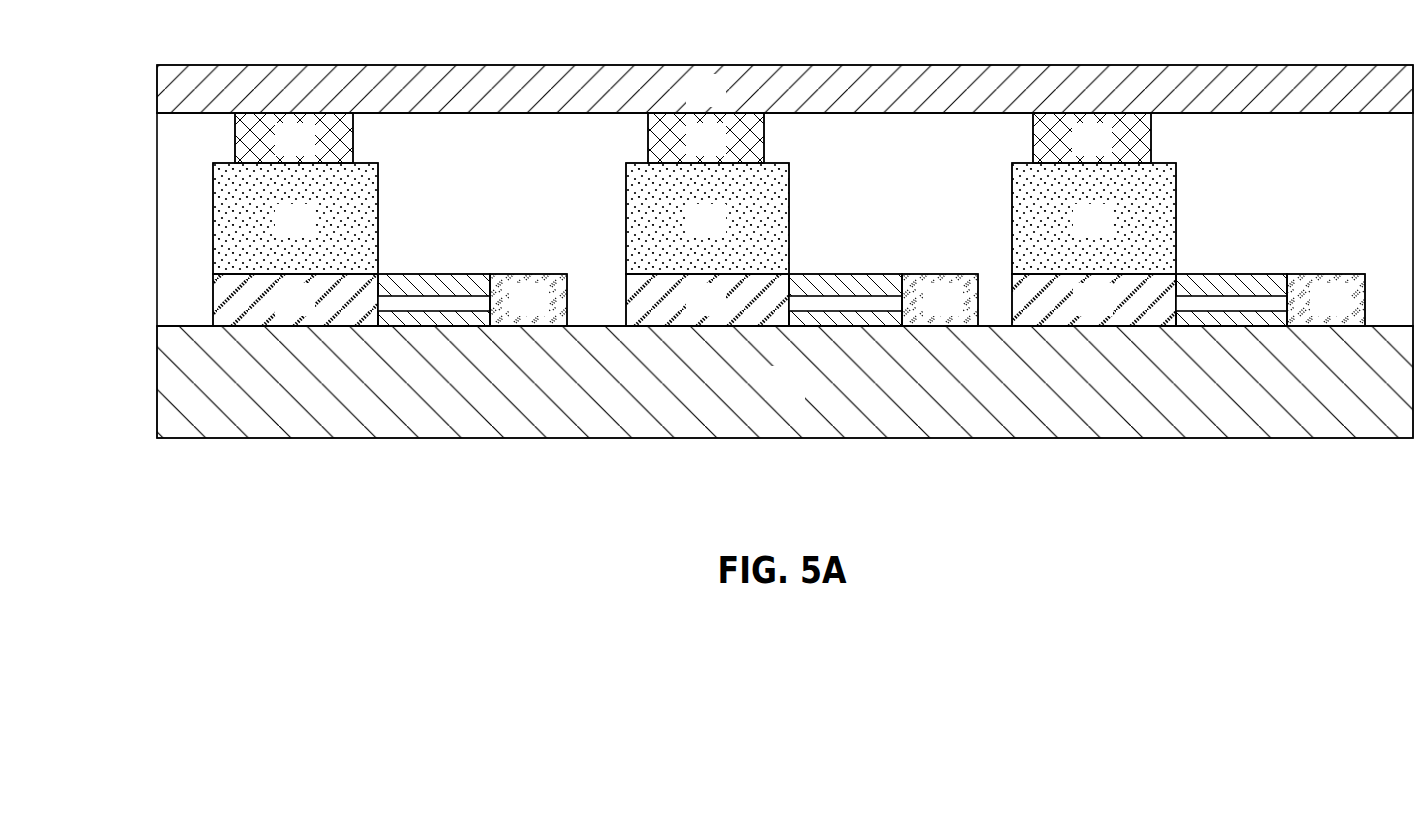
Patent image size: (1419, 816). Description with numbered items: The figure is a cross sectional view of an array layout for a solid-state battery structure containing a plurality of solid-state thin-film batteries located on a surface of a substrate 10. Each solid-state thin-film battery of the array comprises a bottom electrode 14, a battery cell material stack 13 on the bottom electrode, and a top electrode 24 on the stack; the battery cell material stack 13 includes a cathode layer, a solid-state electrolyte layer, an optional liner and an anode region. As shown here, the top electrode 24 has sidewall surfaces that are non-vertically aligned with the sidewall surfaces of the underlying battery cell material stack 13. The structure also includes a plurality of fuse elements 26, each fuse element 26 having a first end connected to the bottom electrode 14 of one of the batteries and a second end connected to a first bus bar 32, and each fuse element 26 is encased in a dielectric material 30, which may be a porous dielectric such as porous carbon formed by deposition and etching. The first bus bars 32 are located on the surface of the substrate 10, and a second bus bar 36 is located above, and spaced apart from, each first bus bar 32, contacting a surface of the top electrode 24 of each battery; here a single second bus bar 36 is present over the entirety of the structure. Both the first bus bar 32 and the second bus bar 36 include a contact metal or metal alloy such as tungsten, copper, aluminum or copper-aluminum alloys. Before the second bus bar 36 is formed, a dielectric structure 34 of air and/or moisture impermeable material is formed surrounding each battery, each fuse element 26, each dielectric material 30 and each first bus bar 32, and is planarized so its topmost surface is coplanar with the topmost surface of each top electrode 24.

The substrate 10 is at (769, 396).
The battery cell material stack 13 is at (280, 234).
The bottom electrode 14 is at (280, 313).
The top electrode 24 is at (279, 154).
The fuse element 26 is at (405, 306).
The dielectric material 30 is at (441, 283).
The first bus bar 32 is at (514, 313).
The dielectric structure 34 is at (172, 209).
The second bus bar 36 is at (690, 104).